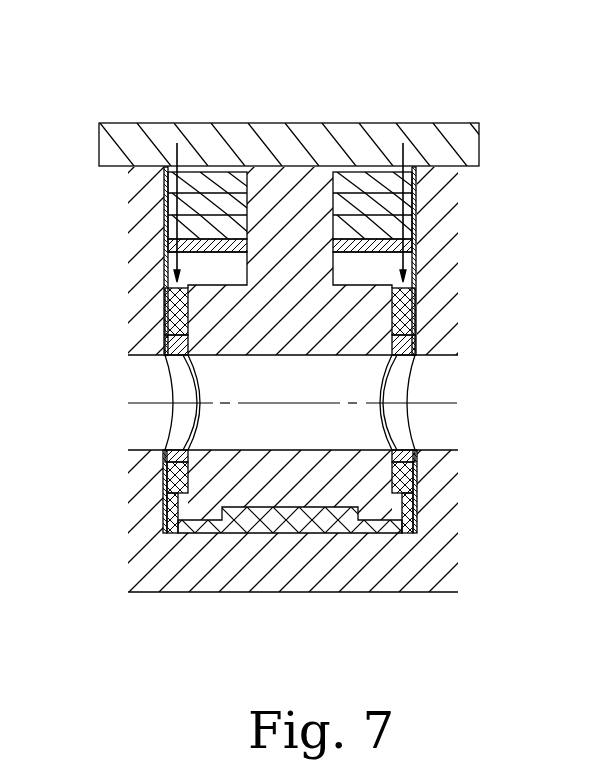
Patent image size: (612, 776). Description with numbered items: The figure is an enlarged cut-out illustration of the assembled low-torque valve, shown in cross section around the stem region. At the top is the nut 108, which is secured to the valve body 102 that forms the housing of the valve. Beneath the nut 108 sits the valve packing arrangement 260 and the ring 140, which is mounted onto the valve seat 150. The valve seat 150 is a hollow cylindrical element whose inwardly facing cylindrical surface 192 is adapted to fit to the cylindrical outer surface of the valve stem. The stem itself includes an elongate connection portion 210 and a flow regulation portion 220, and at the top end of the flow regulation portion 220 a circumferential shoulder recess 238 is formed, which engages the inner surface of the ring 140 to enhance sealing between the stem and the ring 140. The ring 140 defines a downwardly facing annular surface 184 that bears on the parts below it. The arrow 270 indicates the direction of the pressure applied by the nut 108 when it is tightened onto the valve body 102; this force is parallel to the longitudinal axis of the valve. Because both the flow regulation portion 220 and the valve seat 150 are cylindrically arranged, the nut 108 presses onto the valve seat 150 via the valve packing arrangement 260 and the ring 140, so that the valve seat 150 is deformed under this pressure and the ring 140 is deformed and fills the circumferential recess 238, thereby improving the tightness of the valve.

The valve body 102 is at (432, 327).
The nut 108 is at (162, 132).
The ring 140 is at (412, 245).
The valve seat 150 is at (405, 300).
The downwardly facing annular surface 184 is at (405, 275).
The inwardly facing cylindrical surface 192 is at (163, 323).
The elongate connection portion 210 is at (162, 208).
The flow regulation portion 220 is at (345, 342).
The circumferential shoulder recess 238 is at (168, 287).
The valve packing arrangement 260 is at (418, 205).
The arrow indicating direction of applied pressure 270 is at (400, 160).